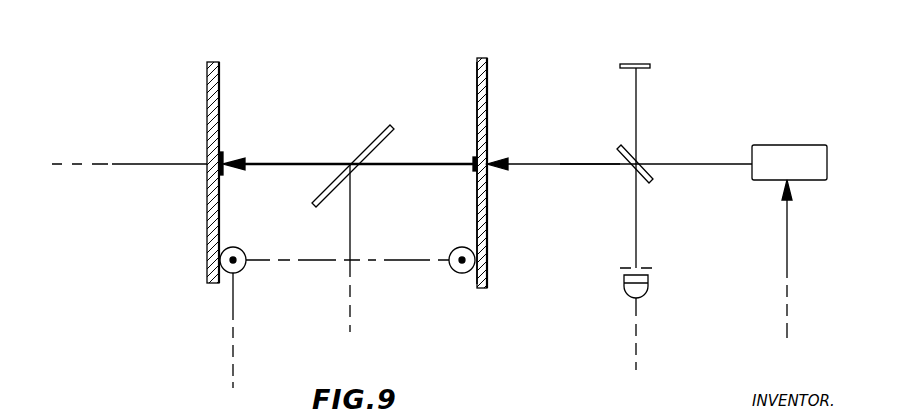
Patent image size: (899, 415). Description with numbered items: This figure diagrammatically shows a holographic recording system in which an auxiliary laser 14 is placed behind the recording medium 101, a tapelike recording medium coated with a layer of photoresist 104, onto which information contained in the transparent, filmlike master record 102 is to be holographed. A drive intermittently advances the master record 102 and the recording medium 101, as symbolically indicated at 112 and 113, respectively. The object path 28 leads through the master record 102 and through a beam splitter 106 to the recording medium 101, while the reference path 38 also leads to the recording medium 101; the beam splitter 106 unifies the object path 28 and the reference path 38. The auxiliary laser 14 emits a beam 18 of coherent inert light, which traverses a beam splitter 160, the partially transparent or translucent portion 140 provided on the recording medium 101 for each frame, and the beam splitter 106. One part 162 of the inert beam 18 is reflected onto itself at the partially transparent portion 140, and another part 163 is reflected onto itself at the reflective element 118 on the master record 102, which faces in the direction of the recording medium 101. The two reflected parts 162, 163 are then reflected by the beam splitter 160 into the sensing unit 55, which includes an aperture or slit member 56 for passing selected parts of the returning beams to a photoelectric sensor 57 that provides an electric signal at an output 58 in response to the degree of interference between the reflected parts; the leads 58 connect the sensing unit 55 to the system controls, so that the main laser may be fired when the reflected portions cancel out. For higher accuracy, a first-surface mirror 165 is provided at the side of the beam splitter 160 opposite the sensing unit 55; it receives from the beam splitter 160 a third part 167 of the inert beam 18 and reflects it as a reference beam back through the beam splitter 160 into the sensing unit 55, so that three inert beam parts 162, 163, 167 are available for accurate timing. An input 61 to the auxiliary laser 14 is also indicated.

The auxiliary laser 14 is at (792, 145).
The inert beam 18 is at (553, 166).
The object path 28 is at (185, 156).
The reference path 38 is at (345, 280).
The sensing unit 55 is at (631, 303).
The aperture or slit member 56 is at (640, 265).
The photoelectric sensor 57 is at (650, 290).
The output 58 is at (637, 312).
The power input 61 is at (787, 227).
The recording medium 101 is at (489, 94).
The master record 102 is at (219, 82).
The layer of photoresist 104 is at (474, 89).
The beam splitter 106 is at (388, 126).
The advance of master record 112 is at (244, 250).
The advance of recording medium 113 is at (458, 249).
The reflecting element 118 is at (223, 150).
The partially transparent portion 140 is at (473, 170).
The beam splitter 160 is at (654, 180).
The first part of inert beam 162 is at (596, 146).
The second part of inert beam 163 is at (287, 164).
The first-surface mirror 165 is at (650, 66).
The third part of inert beam 167 is at (636, 101).